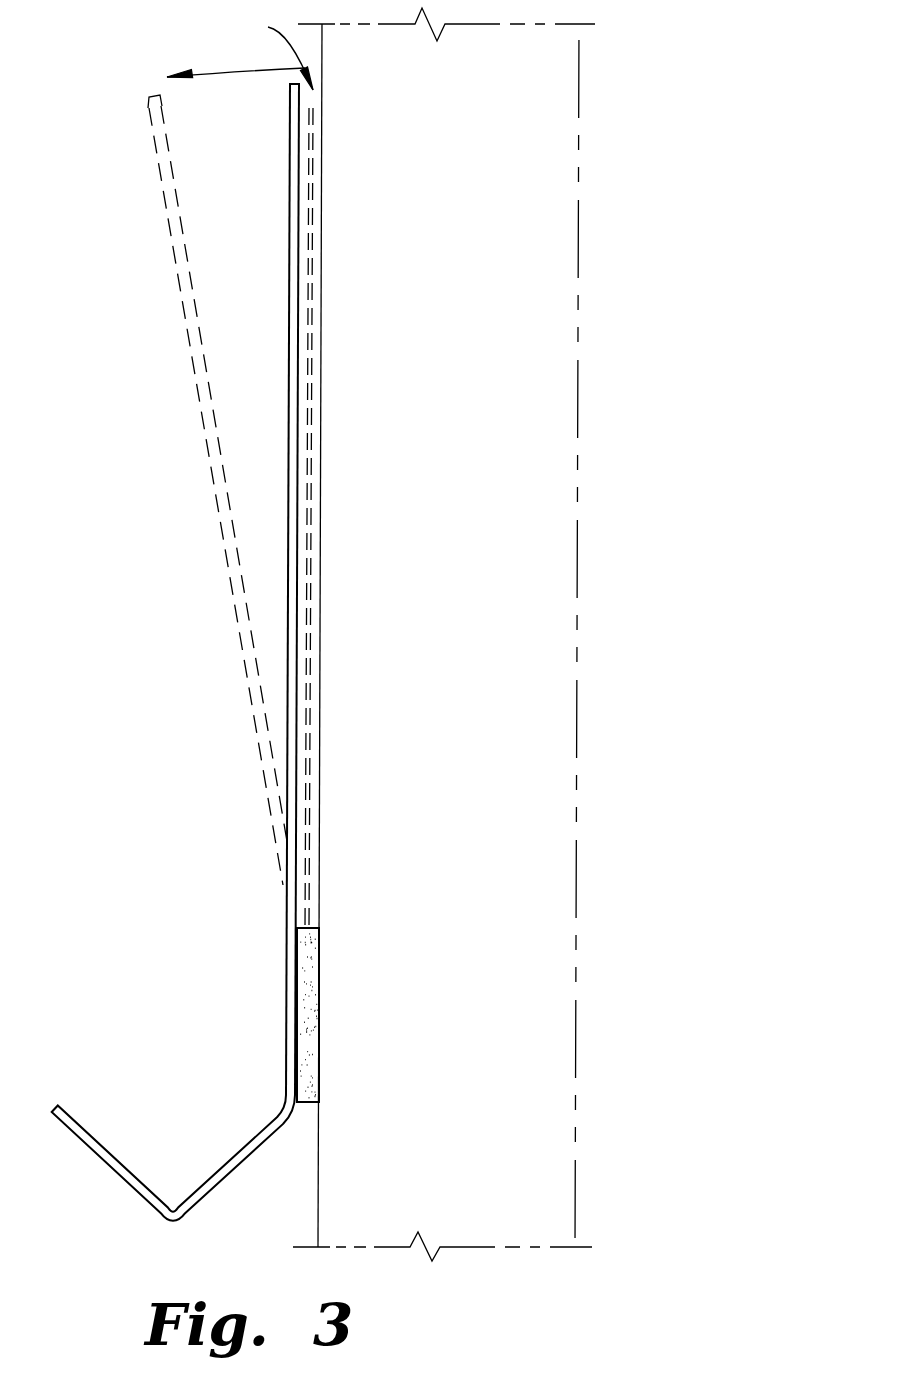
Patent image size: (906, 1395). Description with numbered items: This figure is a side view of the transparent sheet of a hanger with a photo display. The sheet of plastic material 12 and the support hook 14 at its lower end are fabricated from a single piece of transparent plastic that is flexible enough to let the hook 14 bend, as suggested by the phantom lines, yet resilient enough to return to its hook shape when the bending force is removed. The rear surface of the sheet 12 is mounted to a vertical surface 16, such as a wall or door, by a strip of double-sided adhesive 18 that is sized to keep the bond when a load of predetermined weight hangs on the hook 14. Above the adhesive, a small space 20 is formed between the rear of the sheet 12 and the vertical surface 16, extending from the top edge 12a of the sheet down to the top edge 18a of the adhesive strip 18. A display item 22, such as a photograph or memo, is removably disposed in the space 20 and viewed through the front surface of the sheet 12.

The sheet of plastic material 12 is at (290, 285).
The top edge of sheet 12a is at (293, 83).
The support hook 14 is at (143, 1207).
The vertical surface 16 is at (519, 166).
The double-sided adhesive strip 18 is at (317, 1105).
The top edge of adhesive strip 18a is at (316, 928).
The space 20 is at (271, 47).
The display item 22 is at (312, 373).